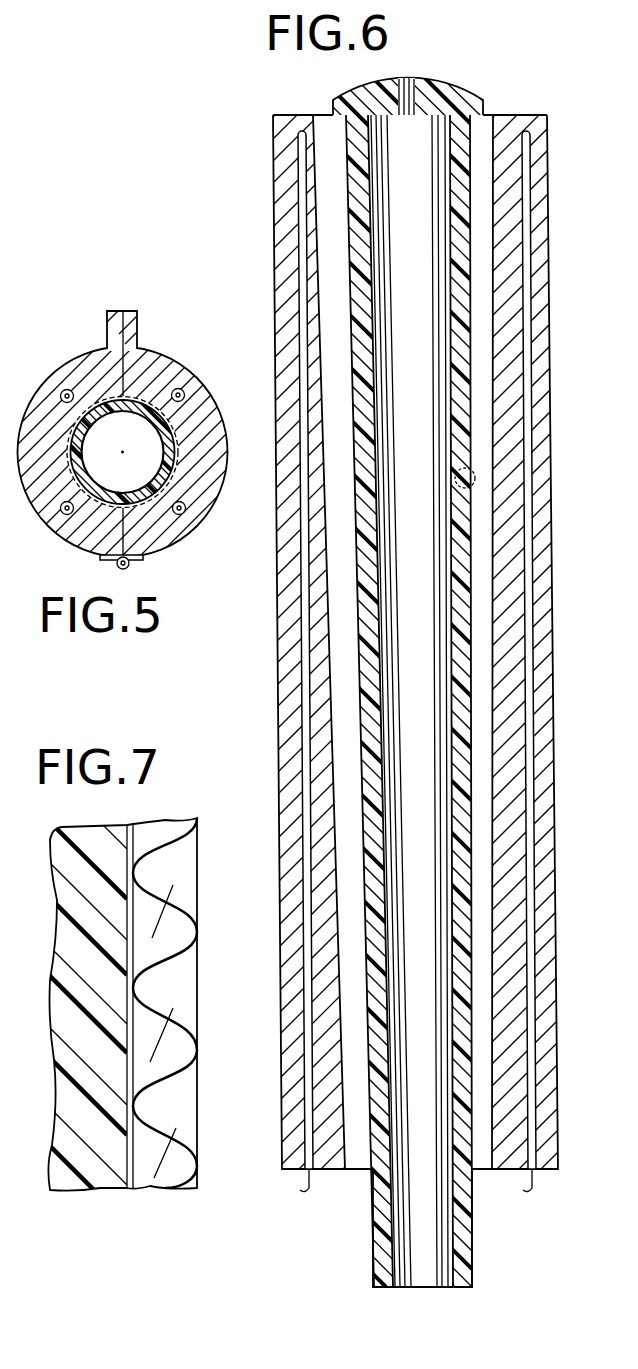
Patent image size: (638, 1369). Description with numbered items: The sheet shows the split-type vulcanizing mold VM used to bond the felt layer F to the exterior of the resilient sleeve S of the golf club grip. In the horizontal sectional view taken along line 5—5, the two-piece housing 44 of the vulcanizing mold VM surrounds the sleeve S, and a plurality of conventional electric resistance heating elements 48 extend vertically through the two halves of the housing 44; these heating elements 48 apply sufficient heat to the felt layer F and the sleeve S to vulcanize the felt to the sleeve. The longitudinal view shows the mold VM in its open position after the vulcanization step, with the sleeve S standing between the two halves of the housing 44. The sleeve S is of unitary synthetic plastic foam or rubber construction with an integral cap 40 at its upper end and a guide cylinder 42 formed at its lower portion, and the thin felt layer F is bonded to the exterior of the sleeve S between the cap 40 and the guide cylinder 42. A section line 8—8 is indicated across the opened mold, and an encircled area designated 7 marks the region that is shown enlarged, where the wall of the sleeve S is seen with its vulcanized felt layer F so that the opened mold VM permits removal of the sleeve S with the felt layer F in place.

In FIG. 6, the cap 40 is at (469, 100).
In FIG. 6, the guide cylinder 42 is at (372, 1216).
In FIG. 6, the two-piece housing 44 is at (278, 672).
In FIG. 5, the two-piece housing 44 is at (95, 355).
In FIG. 5, the electric resistance heating elements 48 is at (184, 398).
In FIG. 6, the vulcanizing mold VM is at (382, 653).
In FIG. 5, the vulcanizing mold VM is at (121, 361).
In FIG. 6, the sleeve S is at (420, 387).
In FIG. 7, the sleeve S is at (101, 1178).
In FIG. 6, the felt layer F is at (467, 618).
In FIG. 5, the felt layer F is at (174, 437).
In FIG. 7, the felt layer F is at (178, 1111).
In FIG. 5, the section line 5— 5 is at (18, 321).
In FIG. 6, the encircled area 7 is at (468, 500).
In FIG. 6, the section line 8— 8 is at (250, 318).